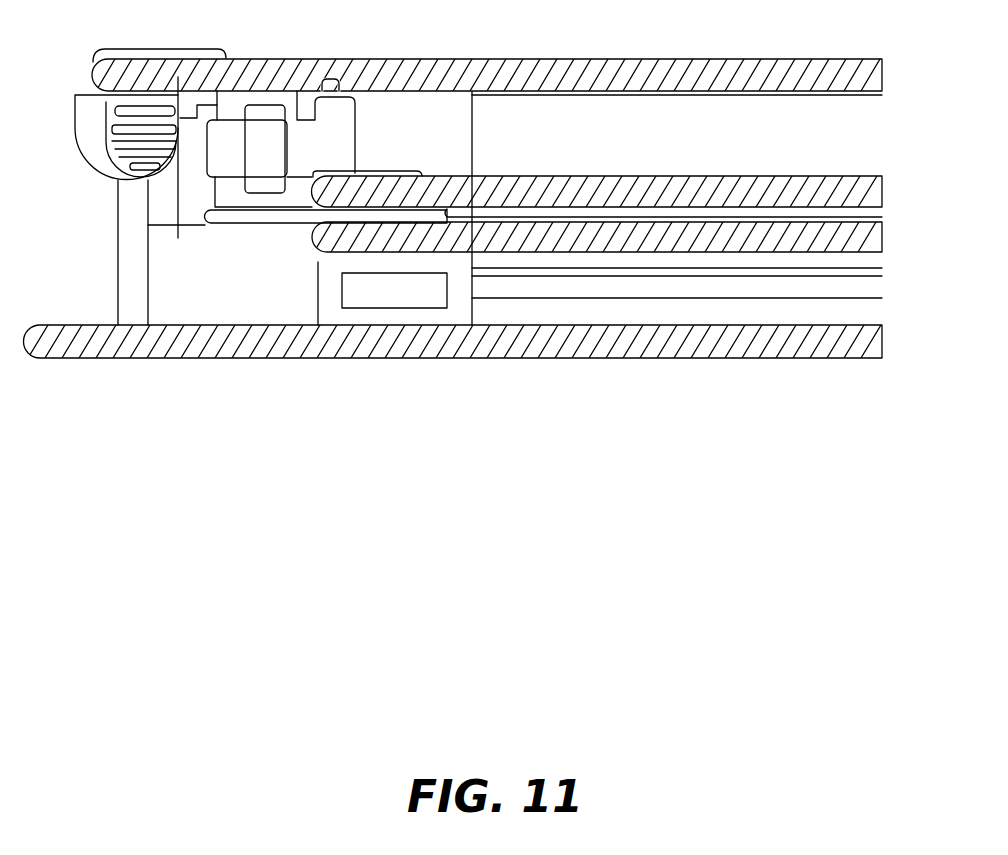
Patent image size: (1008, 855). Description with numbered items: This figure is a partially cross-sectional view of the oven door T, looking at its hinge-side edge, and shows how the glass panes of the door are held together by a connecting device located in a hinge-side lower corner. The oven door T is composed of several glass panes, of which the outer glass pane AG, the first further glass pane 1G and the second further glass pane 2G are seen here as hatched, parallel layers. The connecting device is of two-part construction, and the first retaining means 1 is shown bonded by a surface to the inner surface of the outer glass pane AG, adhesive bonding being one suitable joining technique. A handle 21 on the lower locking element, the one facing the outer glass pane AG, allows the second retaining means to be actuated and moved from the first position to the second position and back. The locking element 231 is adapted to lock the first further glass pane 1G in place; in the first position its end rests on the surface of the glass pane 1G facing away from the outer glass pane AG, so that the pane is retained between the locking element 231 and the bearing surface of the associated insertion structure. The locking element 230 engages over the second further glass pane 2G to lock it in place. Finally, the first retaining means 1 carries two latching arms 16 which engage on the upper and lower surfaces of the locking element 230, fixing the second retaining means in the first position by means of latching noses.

The first retaining means 1 is at (233, 320).
The latching arms 16 is at (257, 113).
The handle 21 is at (100, 162).
The locking element 230 is at (331, 108).
The locking element 231 is at (312, 213).
The first further glass pane 1G is at (414, 70).
The second further glass pane 2G is at (708, 190).
The outer glass pane AG is at (582, 340).
The oven door T is at (396, 385).